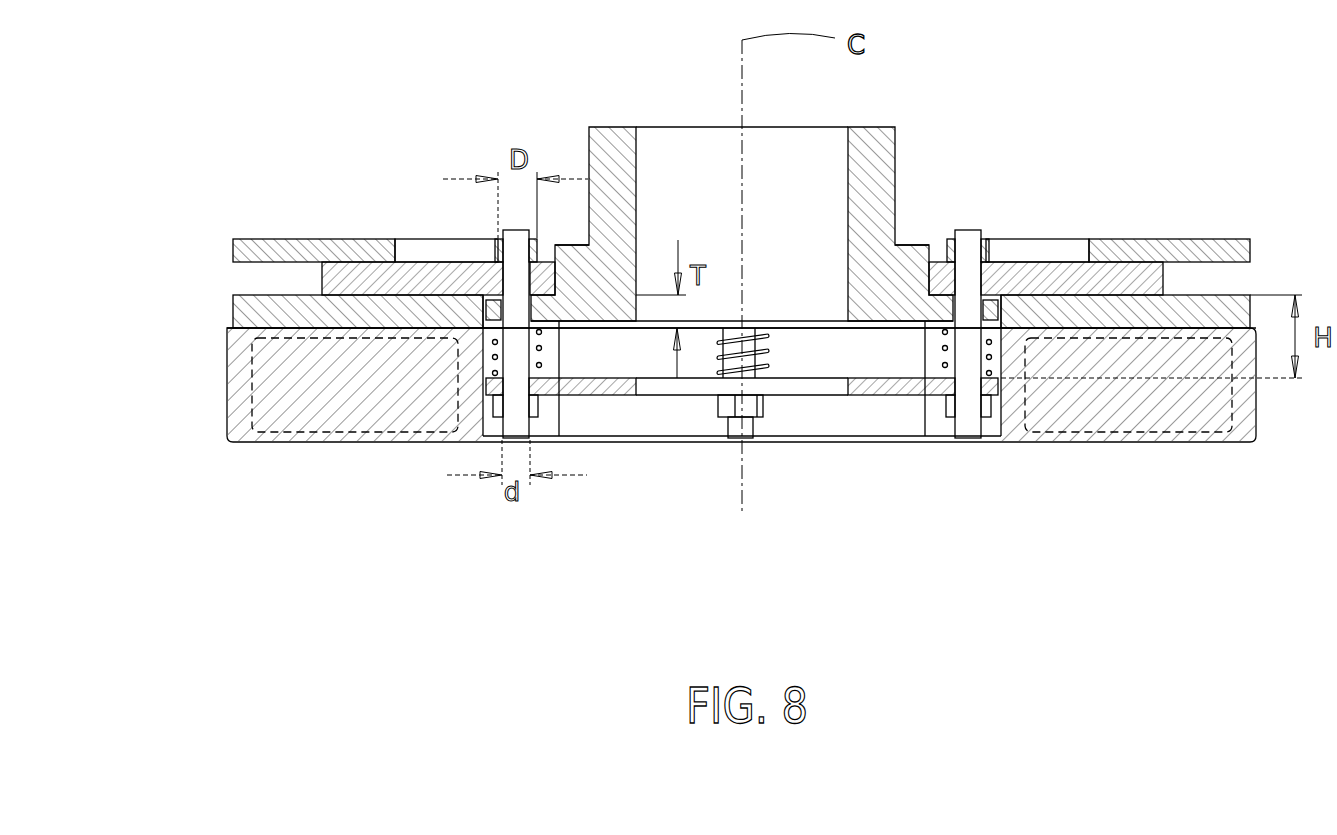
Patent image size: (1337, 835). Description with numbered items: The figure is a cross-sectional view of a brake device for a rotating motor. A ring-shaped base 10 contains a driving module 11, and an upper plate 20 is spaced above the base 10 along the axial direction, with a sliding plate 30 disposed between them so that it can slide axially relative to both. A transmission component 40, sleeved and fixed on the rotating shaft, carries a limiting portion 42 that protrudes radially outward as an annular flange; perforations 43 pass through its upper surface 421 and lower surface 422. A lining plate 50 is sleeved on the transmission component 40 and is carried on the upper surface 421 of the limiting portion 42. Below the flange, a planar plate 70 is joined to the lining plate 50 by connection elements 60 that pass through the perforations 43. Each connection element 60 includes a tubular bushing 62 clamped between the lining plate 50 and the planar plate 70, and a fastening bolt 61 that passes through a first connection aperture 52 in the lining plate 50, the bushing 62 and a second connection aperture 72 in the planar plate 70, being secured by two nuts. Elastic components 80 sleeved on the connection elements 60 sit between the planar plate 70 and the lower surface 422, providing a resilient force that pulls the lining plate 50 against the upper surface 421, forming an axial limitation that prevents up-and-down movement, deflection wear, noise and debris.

The base 10 is at (227, 407).
The driving module 11 is at (252, 412).
The upper plate 20 is at (233, 252).
The sliding plate 30 is at (233, 316).
The transmission component 40 is at (612, 127).
The limiting portion 42 is at (741, 338).
The upper surface 421 is at (930, 322).
The lower surface 422 is at (925, 330).
The perforations 43 is at (905, 365).
The lining plate 50 is at (320, 280).
The first connection apertures 52 is at (985, 278).
The connection elements 60 is at (552, 351).
The fastening bolt 61 is at (490, 360).
The bushing 62 is at (488, 313).
The planar plate 70 is at (503, 393).
The second connection apertures 72 is at (934, 414).
The elastic components 80 is at (542, 367).